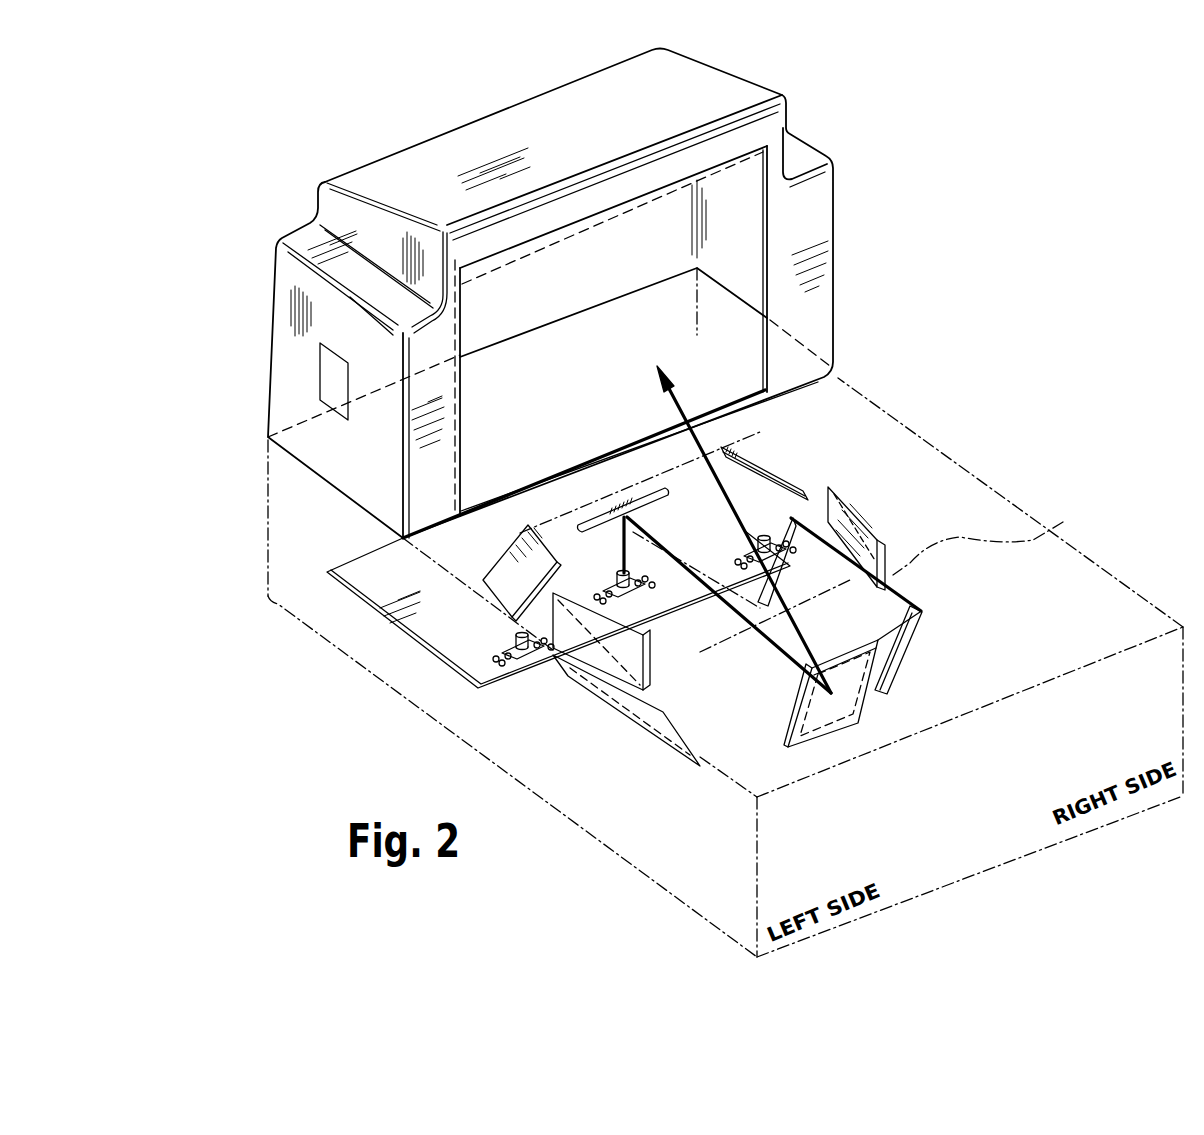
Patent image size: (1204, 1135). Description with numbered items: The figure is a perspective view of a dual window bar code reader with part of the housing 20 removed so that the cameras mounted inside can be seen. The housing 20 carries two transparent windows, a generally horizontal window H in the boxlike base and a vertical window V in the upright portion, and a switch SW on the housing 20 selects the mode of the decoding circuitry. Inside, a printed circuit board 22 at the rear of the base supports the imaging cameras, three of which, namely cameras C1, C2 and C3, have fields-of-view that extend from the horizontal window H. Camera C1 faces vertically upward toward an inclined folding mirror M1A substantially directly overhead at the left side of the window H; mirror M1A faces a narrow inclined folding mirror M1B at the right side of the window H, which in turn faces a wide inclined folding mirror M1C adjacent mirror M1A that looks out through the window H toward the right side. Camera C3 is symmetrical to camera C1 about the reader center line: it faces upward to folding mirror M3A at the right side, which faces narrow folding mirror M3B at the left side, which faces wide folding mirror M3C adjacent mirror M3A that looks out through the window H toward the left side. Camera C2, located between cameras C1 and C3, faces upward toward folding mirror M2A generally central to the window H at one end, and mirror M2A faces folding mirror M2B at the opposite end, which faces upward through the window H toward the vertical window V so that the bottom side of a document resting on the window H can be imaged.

The housing 20 is at (795, 244).
The vertical window V is at (738, 215).
The switch SW is at (330, 377).
The printed circuit board 22 is at (460, 637).
The inclined folding mirror M1A is at (523, 557).
The inclined folding mirror M2A is at (613, 505).
The inclined folding mirror M3A is at (753, 457).
The inclined narrow folding mirror M1B is at (870, 523).
The inclined folding mirror M2B is at (827, 710).
The inclined narrow folding mirror M3B is at (617, 650).
The inclined wide folding mirror M1C is at (650, 717).
The inclined wide folding mirror M3C is at (893, 608).
The camera C1 is at (527, 653).
The camera C2 is at (605, 575).
The camera C3 is at (773, 527).
The horizontal window H is at (987, 534).